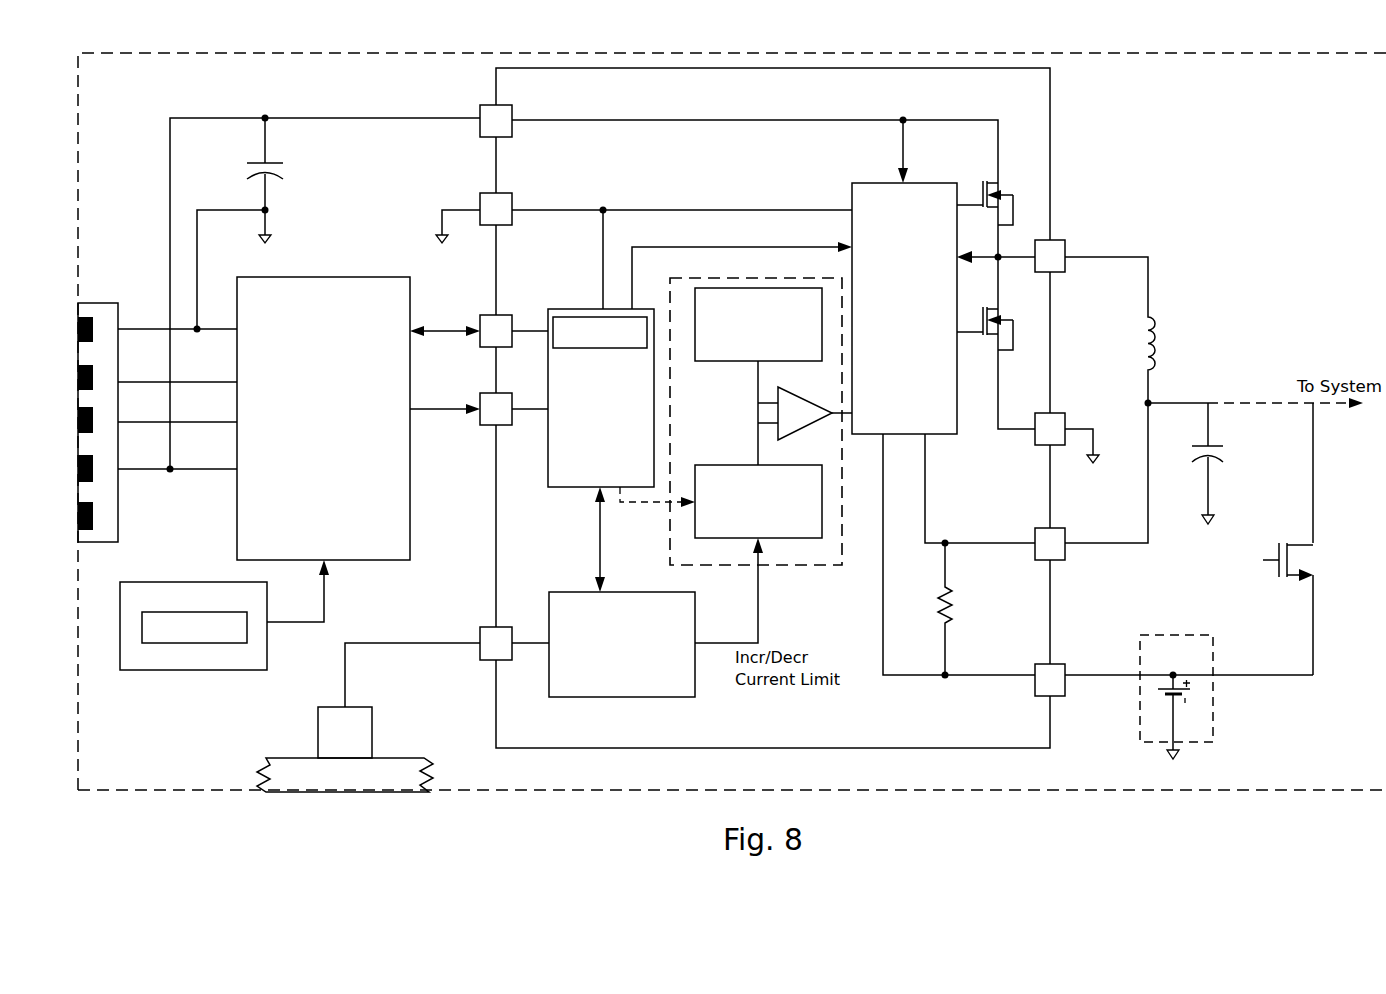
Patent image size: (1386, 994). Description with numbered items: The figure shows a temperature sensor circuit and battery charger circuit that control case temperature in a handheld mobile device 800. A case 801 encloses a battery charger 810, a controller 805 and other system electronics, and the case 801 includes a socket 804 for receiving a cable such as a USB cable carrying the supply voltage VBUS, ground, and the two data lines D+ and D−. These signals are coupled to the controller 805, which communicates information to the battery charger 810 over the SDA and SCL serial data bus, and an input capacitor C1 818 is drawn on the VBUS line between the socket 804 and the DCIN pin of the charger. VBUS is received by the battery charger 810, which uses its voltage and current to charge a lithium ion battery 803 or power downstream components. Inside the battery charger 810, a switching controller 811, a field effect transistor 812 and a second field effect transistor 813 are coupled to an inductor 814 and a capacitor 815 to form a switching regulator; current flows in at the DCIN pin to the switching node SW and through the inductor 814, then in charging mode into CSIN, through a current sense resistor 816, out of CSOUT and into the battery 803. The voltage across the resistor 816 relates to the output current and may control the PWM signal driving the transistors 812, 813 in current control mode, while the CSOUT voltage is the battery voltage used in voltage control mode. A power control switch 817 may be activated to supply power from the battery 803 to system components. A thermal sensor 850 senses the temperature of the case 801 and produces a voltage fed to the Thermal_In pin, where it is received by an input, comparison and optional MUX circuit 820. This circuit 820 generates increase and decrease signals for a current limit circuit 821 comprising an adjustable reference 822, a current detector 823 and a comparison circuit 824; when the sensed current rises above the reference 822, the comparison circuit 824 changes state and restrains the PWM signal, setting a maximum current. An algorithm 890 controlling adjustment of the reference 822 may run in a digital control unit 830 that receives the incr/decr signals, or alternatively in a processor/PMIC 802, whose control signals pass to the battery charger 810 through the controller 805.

The handheld mobile device 800 is at (732, 421).
The case 801 is at (268, 758).
The processor/PMIC 802 is at (213, 670).
The lithium ion battery 803 is at (1140, 697).
The socket 804 is at (118, 303).
The controller 805 is at (323, 418).
The battery charger 810 is at (770, 68).
The switching controller 811 is at (858, 183).
The field effect transistor 812 is at (1000, 213).
The field effect transistor 813 is at (1000, 343).
The inductor 814 is at (1138, 330).
The capacitor 815 is at (1232, 463).
The current sense resistor 816 is at (966, 609).
The power control switch 817 is at (1274, 608).
The input capacitor C1 818 is at (284, 180).
The input circuit, comparison circuit, and optional MUX circuit 820 is at (563, 592).
The current limit circuit 821 is at (787, 567).
The adjustable reference 822 is at (745, 465).
The current detector 823 is at (758, 288).
The comparison circuit 824 is at (815, 413).
The digital control unit 830 is at (601, 398).
The thermal sensor 850 is at (325, 707).
The algorithm 890 is at (222, 643).